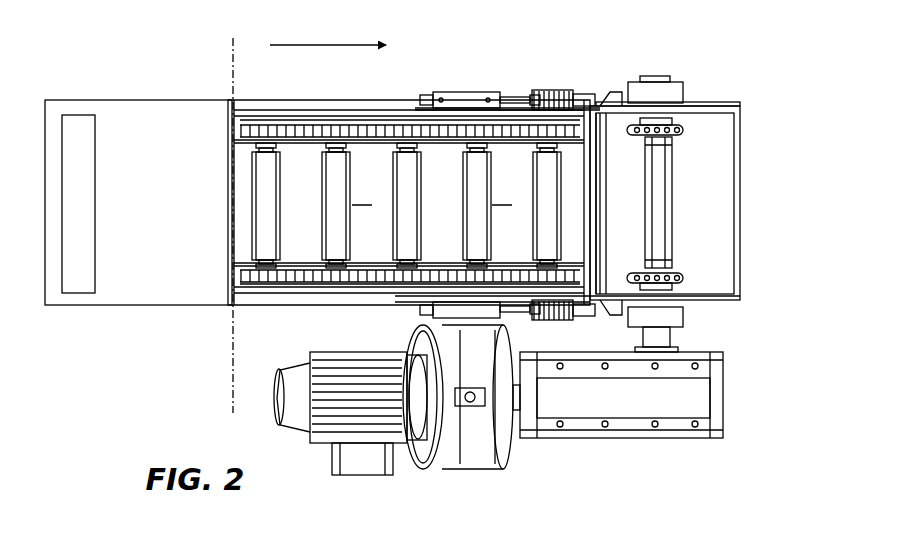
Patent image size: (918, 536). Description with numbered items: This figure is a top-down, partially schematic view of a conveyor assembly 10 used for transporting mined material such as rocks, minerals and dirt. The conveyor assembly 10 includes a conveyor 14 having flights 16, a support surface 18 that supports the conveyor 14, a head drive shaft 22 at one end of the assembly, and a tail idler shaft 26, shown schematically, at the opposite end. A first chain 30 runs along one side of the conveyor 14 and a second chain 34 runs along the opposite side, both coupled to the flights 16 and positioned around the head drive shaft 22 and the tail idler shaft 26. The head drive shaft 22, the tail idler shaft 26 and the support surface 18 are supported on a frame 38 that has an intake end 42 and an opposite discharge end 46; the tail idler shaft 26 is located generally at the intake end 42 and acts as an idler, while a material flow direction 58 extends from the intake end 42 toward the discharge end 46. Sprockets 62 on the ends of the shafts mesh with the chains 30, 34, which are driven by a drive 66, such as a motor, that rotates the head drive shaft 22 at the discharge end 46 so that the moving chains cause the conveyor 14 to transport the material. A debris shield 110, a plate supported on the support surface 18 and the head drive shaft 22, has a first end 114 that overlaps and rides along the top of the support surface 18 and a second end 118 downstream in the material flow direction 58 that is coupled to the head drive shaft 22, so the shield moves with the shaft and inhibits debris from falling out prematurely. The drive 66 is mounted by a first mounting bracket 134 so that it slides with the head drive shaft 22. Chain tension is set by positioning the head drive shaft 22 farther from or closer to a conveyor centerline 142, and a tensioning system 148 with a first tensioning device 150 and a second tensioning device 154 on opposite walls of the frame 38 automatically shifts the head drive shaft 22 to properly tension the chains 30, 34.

The conveyor assembly 10 is at (495, 256).
The conveyor 14 is at (409, 200).
The flights 16 is at (474, 182).
The support surface 18 is at (300, 240).
The head drive shaft 22 is at (683, 154).
The tail idler shaft 26 is at (82, 295).
The first chain 30 is at (372, 283).
The second chain 34 is at (357, 126).
The frame 38 is at (256, 328).
The intake end 42 is at (108, 86).
The discharge end 46 is at (759, 165).
The material flow direction 58 is at (330, 45).
The sprockets 62 is at (686, 130).
The drive 66 is at (456, 459).
The debris shield 110 is at (634, 222).
The first end 114 is at (609, 162).
The second end 118 is at (708, 196).
The first mounting bracket 134 is at (685, 316).
The conveyor centerline 142 is at (233, 70).
The tensioning system 148 is at (567, 162).
The first tensioning device 150 is at (560, 320).
The second tensioning device 154 is at (548, 90).